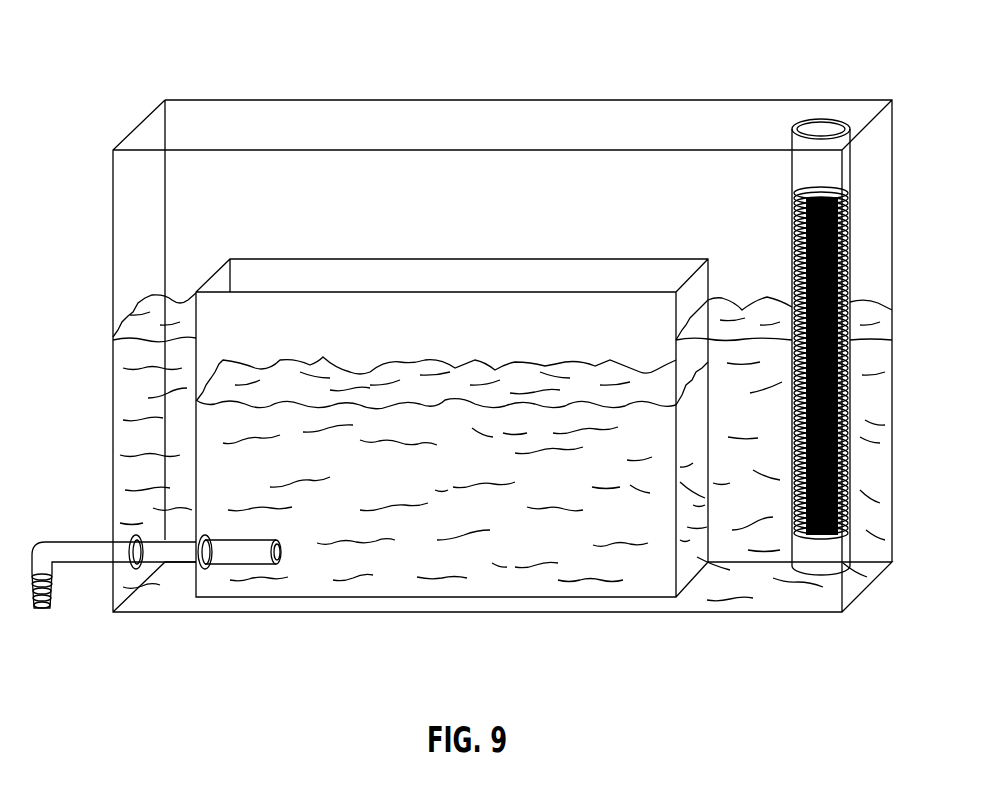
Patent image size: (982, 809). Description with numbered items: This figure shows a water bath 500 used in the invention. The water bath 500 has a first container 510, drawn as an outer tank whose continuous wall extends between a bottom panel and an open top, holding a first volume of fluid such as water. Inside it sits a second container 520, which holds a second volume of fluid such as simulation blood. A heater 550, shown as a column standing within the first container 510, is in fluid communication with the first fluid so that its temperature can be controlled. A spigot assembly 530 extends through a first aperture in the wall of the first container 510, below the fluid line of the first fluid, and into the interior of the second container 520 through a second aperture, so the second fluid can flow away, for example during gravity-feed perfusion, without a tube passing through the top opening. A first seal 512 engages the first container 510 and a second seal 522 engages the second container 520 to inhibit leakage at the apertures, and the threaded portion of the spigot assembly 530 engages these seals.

The water treatment system 500 is at (181, 52).
The first container 510 is at (382, 100).
The second container 520 is at (528, 597).
The heater 550 is at (820, 119).
The first seal 512 is at (131, 544).
The second seal 522 is at (207, 566).
The spigot assembly 530 is at (43, 611).